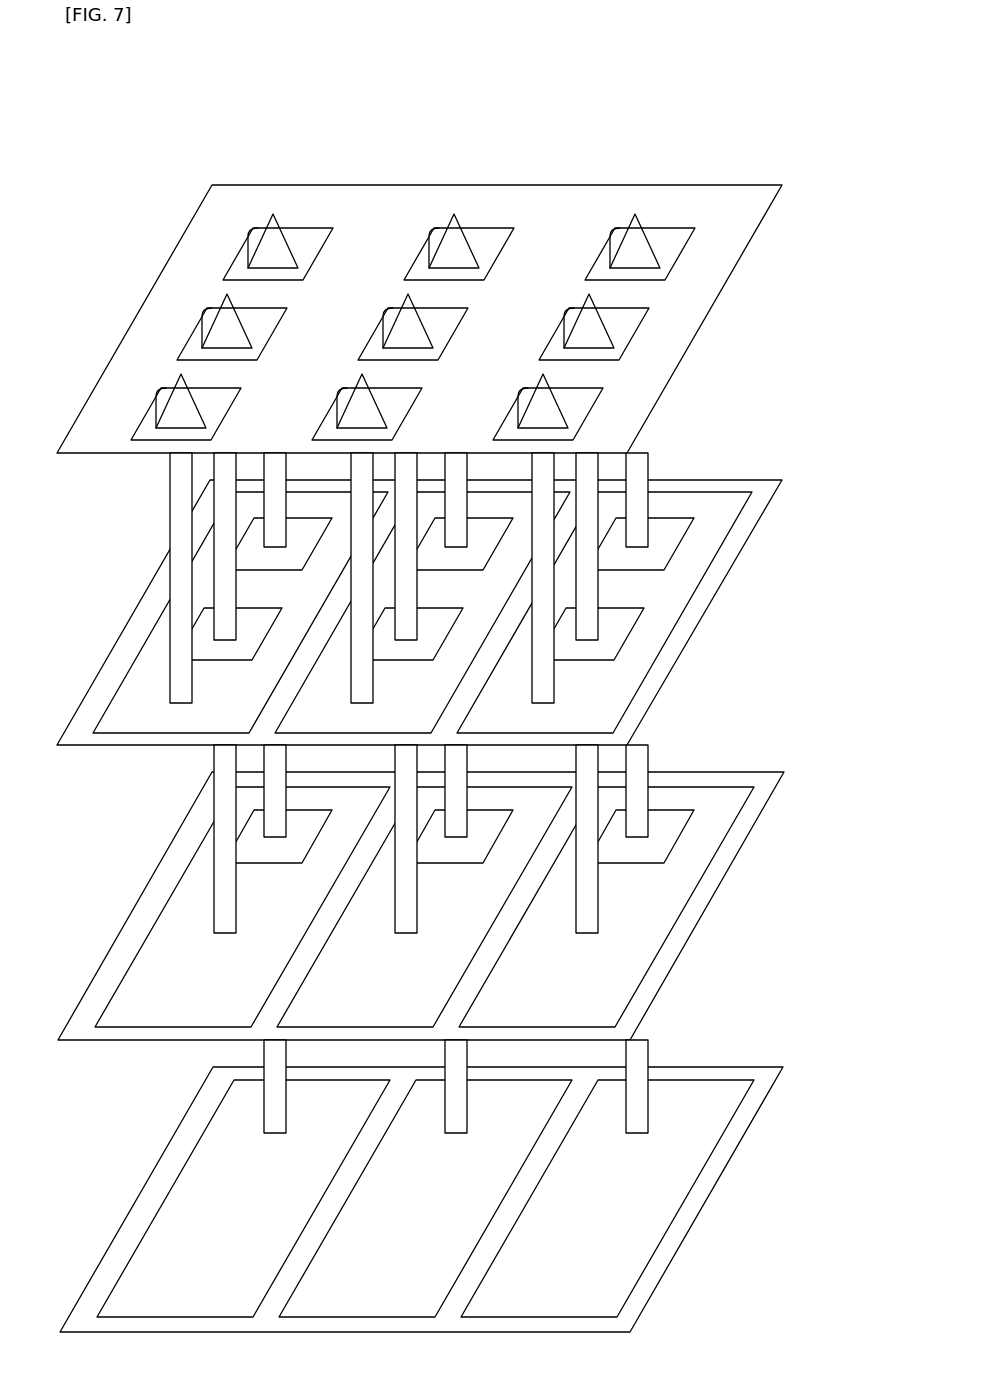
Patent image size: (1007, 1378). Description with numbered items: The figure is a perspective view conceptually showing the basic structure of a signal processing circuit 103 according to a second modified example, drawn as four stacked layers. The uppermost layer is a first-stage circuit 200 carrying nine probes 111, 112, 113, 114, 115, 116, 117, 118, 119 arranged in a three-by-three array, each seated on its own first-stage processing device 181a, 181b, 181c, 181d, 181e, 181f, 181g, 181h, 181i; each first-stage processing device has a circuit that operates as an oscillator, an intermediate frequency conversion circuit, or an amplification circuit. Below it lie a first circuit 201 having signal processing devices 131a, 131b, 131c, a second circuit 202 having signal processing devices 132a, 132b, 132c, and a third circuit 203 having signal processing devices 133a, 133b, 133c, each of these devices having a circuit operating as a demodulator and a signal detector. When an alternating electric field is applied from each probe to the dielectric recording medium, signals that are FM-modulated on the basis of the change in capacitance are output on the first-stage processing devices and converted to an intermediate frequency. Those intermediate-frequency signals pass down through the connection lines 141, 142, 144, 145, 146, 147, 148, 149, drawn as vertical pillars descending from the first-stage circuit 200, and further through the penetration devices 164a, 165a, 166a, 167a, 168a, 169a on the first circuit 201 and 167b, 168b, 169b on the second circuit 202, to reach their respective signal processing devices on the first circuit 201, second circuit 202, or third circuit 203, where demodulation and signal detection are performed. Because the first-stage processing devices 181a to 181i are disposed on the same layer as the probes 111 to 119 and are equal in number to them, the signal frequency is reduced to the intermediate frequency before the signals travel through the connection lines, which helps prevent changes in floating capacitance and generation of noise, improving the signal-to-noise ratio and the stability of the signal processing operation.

The signal processing circuit 103 is at (131, 90).
The first-stage circuit 200 is at (745, 204).
The first circuit 201 is at (737, 536).
The second circuit 202 is at (737, 821).
The third circuit 203 is at (737, 1116).
The probe 111 is at (173, 420).
The probe 112 is at (368, 412).
The probe 113 is at (540, 403).
The probe 114 is at (227, 342).
The probe 115 is at (408, 327).
The probe 116 is at (583, 327).
The probe 117 is at (272, 258).
The probe 118 is at (466, 256).
The probe 119 is at (627, 242).
The first-stage processing device 181a is at (160, 395).
The first-stage processing device 181b is at (328, 420).
The first-stage processing device 181c is at (580, 413).
The first-stage processing device 181d is at (203, 320).
The first-stage processing device 181e is at (374, 348).
The first-stage processing device 181f is at (618, 335).
The first-stage processing device 181g is at (248, 240).
The first-stage processing device 181h is at (470, 237).
The first-stage processing device 181i is at (667, 253).
The connection line 141 is at (178, 518).
The connection line 142 is at (360, 472).
The connection line 144 is at (225, 567).
The connection line 145 is at (417, 600).
The connection line 146 is at (597, 595).
The connection line 147 is at (273, 486).
The connection line 148 is at (455, 463).
The connection line 149 is at (632, 490).
The signal processing device 131a is at (163, 652).
The signal processing device 131b is at (337, 715).
The signal processing device 131c is at (628, 652).
The signal processing device 132a is at (192, 907).
The signal processing device 132b is at (340, 977).
The signal processing device 132c is at (630, 947).
The signal processing device 133a is at (192, 1197).
The signal processing device 133b is at (340, 1265).
The signal processing device 133c is at (630, 1237).
The penetration device 164a is at (237, 648).
The penetration device 165a is at (415, 648).
The penetration device 166a is at (588, 648).
The penetration device 167a is at (295, 547).
The penetration device 168a is at (485, 535).
The penetration device 169a is at (667, 537).
The penetration device 167b is at (267, 843).
The penetration device 168b is at (447, 847).
The penetration device 169b is at (635, 843).